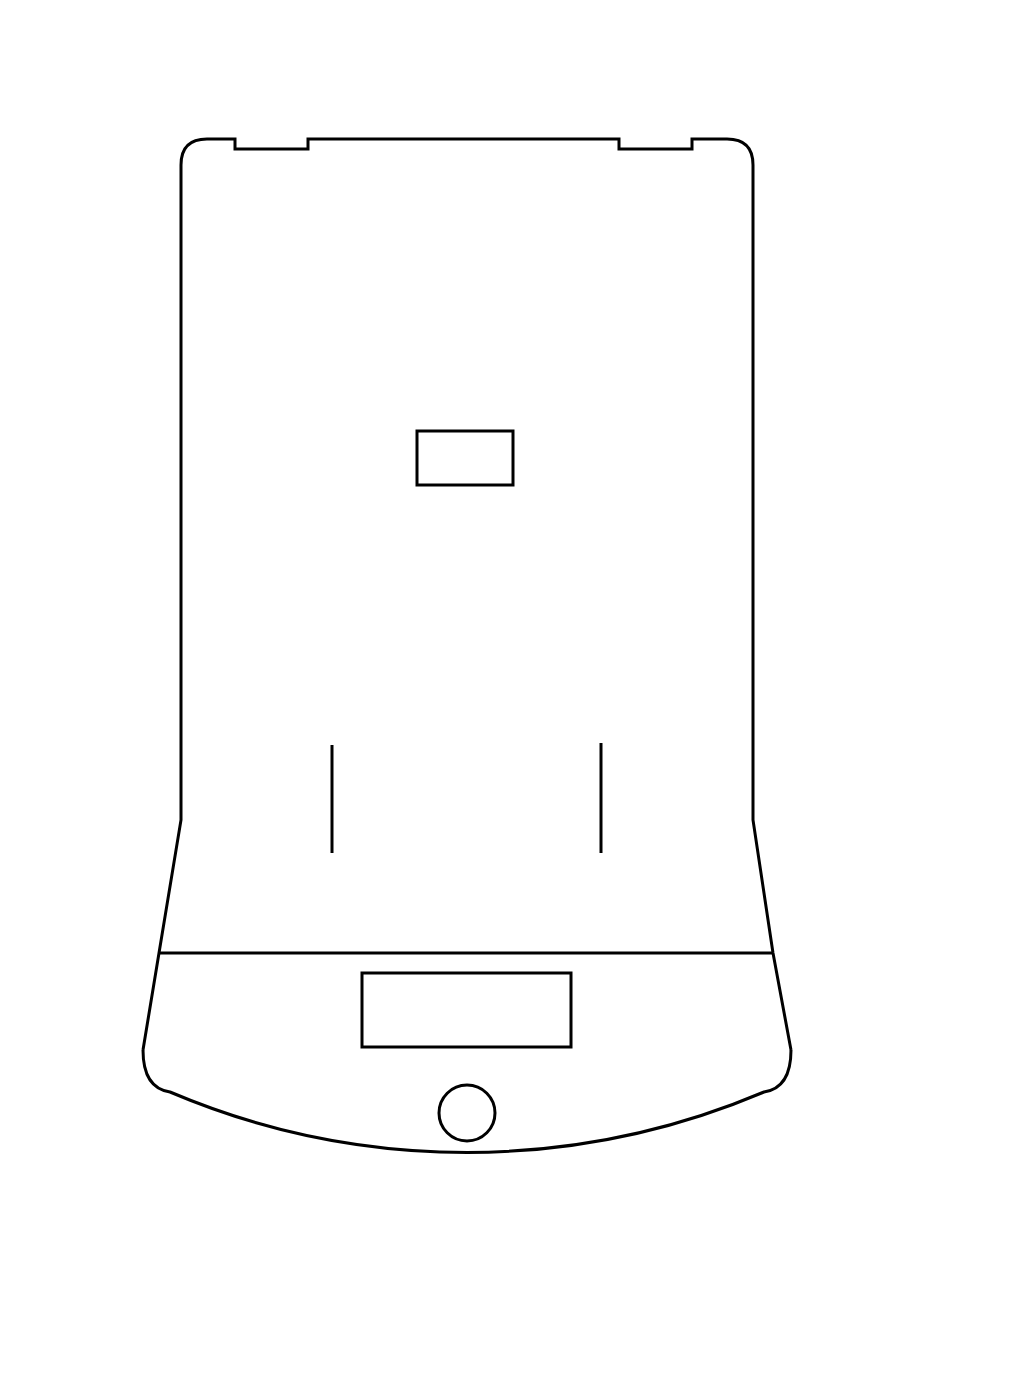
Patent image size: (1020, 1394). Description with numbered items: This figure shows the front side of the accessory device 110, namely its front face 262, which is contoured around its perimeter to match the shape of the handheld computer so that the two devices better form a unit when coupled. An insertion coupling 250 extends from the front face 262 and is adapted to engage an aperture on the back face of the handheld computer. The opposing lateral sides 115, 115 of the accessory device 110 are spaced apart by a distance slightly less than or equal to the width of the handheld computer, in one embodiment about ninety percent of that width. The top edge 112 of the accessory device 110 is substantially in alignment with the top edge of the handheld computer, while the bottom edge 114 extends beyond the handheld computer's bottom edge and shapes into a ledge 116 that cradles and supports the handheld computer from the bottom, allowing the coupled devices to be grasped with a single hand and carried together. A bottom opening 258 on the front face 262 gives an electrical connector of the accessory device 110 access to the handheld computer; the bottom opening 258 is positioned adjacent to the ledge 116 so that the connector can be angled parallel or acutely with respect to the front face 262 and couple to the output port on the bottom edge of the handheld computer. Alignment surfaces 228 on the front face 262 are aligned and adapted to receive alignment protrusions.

The accessory device 110 is at (752, 78).
The top edge 112 is at (423, 138).
The bottom edge 114 is at (600, 1143).
The lateral sides 115 is at (753, 623).
The ledge 116 is at (635, 953).
The alignment surfaces 228 is at (329, 787).
The insertion coupling 250 is at (489, 422).
The bottom opening 258 is at (415, 1031).
The front face 262 is at (692, 415).